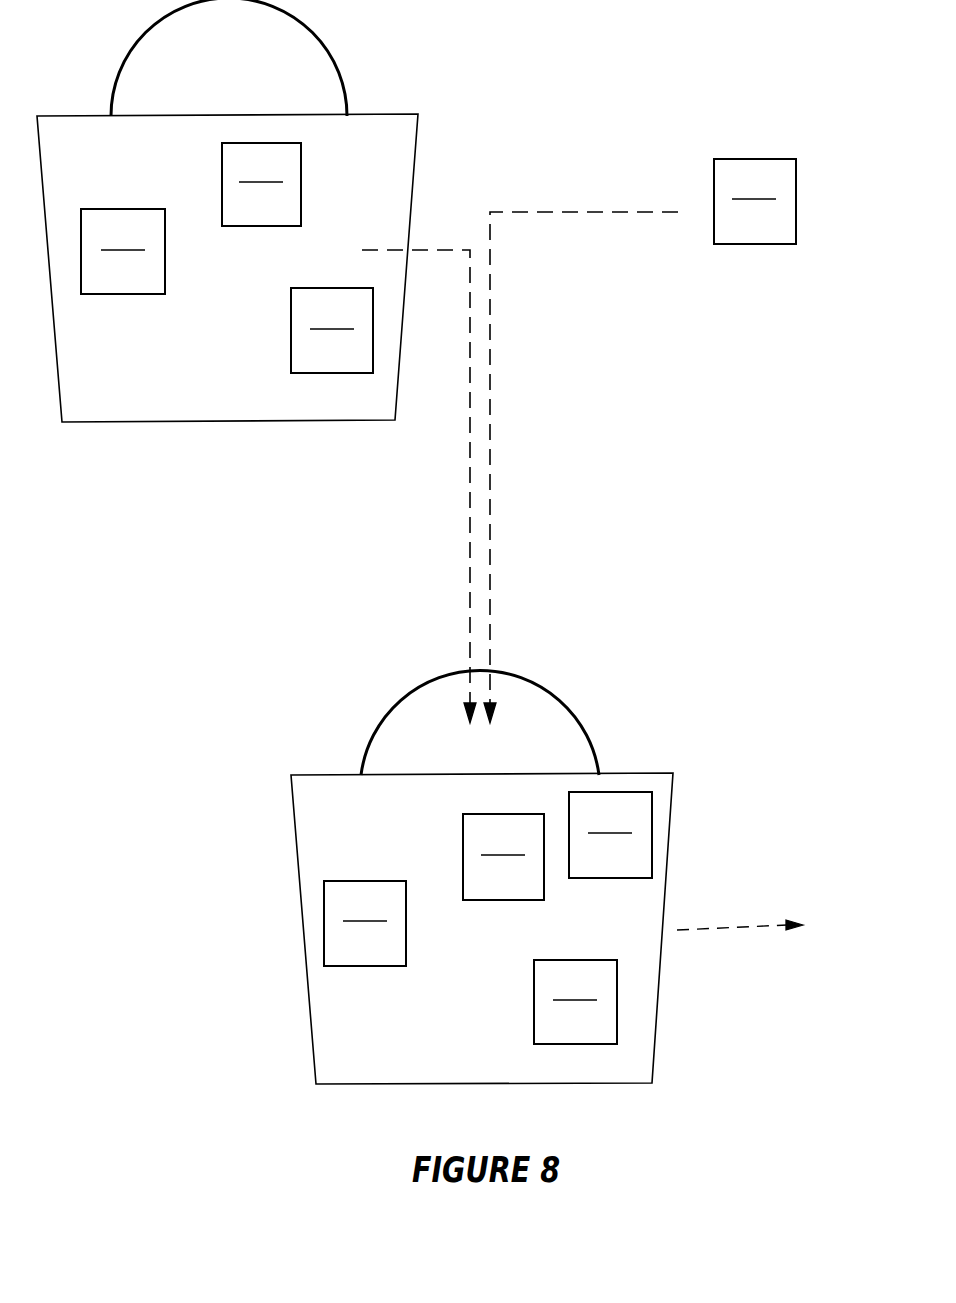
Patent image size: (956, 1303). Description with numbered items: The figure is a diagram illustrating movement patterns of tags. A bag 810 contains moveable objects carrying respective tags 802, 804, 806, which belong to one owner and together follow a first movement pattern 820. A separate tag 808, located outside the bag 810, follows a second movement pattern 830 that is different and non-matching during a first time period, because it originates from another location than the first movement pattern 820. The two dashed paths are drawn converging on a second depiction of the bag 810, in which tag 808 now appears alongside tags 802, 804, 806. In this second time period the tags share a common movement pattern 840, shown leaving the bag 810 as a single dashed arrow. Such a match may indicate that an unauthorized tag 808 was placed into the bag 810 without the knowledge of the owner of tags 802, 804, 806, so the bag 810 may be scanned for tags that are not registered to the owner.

The tag 802 is at (108, 270).
The tag 804 is at (246, 202).
The tag 806 is at (317, 349).
The tag 808 is at (739, 219).
The bag 810 is at (131, 407).
The first movement pattern 820 is at (446, 529).
The second movement pattern 830 is at (555, 529).
The movement pattern 840 is at (767, 904).